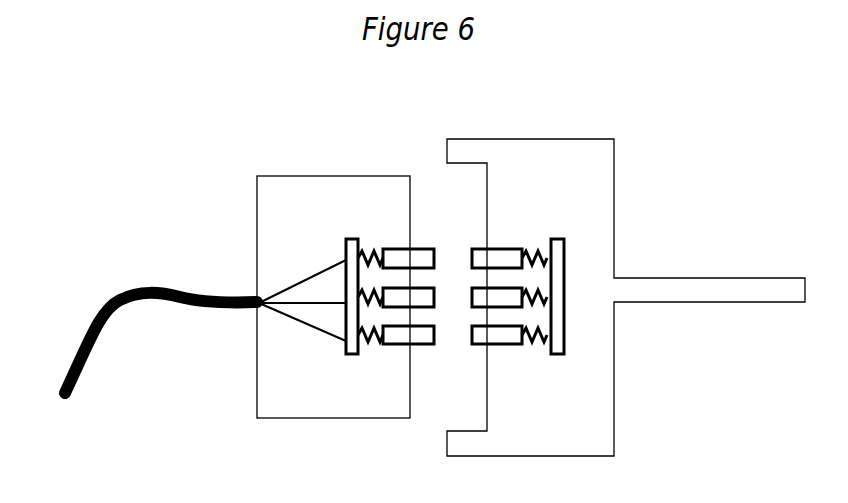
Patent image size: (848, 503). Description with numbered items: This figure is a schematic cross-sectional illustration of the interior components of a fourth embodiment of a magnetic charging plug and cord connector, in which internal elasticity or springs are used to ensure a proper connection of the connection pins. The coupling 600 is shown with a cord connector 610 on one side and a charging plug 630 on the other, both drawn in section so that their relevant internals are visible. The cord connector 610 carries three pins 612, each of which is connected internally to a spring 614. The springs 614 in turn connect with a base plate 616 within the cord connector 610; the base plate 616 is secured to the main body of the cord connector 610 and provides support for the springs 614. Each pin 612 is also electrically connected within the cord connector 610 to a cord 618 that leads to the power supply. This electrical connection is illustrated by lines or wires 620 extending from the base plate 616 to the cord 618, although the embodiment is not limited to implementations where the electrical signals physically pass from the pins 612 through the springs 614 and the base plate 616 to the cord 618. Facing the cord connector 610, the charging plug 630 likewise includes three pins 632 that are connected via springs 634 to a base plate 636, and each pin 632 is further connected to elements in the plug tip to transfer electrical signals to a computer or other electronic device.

The coupling 600 is at (241, 125).
The cord connector 610 is at (333, 418).
The pins 612 is at (424, 249).
The springs 614 is at (378, 248).
The base plate 616 is at (345, 251).
The cord 618 is at (102, 316).
The wires 620 is at (295, 285).
The charging plug 630 is at (550, 456).
The pins 632 is at (473, 346).
The springs 634 is at (538, 346).
The base plate 636 is at (565, 303).